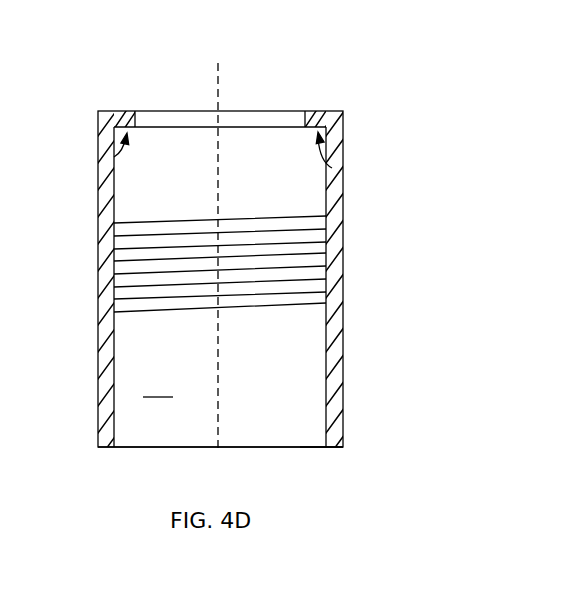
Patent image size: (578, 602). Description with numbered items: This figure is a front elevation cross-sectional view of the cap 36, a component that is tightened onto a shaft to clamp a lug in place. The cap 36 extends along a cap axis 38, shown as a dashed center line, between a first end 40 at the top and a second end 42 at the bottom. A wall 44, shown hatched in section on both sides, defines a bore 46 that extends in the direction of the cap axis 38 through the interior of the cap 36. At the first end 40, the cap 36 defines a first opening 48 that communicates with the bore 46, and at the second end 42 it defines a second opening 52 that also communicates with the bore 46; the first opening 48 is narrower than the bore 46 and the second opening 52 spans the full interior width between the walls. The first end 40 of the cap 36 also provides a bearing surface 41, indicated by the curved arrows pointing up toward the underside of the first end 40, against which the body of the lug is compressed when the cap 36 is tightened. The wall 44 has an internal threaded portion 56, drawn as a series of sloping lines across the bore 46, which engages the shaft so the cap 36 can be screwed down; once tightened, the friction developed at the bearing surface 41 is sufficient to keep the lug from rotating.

The cap 36 is at (131, 73).
The cap axis 38 is at (220, 75).
The first end 40 is at (270, 109).
The bearing surface 41 is at (114, 157).
The second end 42 is at (160, 448).
The wall 44 is at (333, 277).
The bore 46 is at (158, 384).
The first opening 48 is at (300, 114).
The second opening 52 is at (307, 435).
The internal threaded portion 56 is at (298, 240).